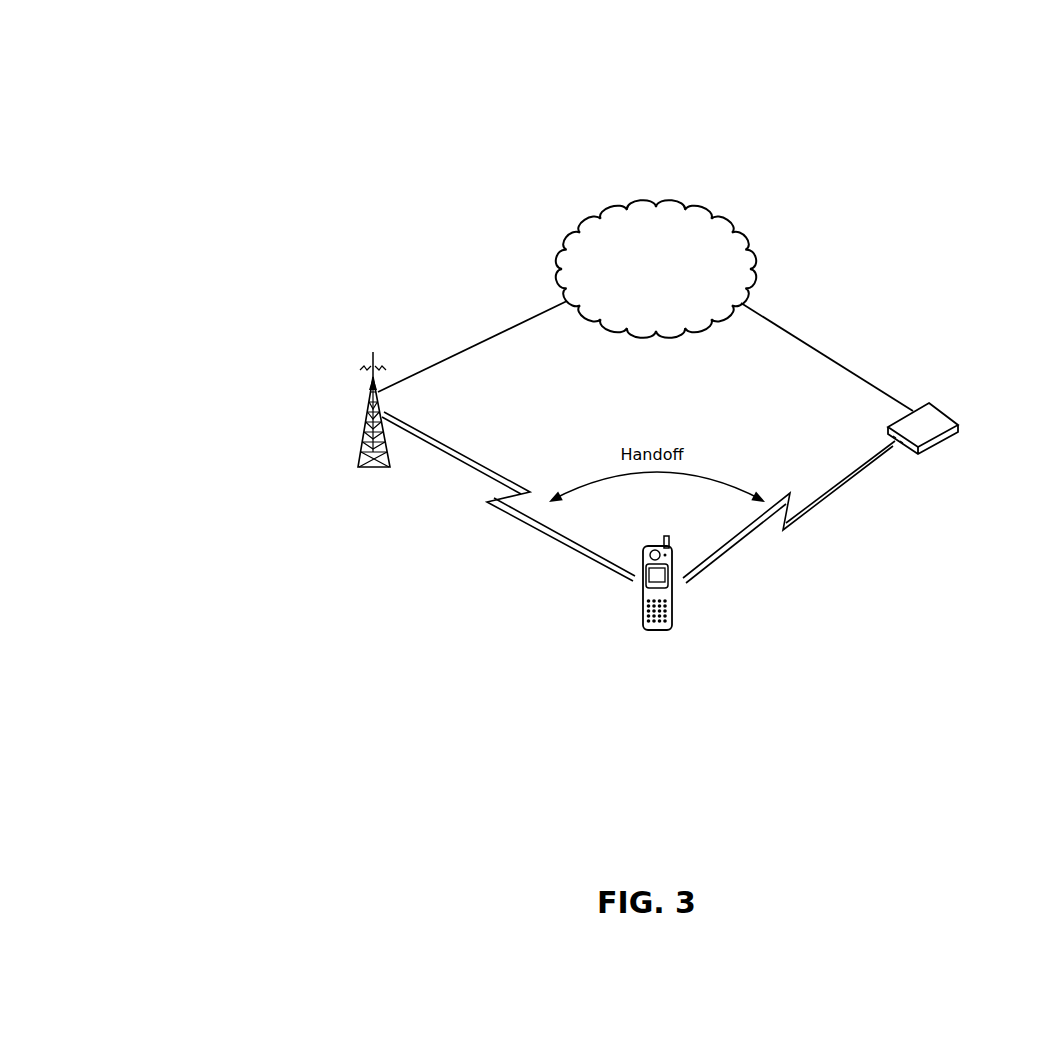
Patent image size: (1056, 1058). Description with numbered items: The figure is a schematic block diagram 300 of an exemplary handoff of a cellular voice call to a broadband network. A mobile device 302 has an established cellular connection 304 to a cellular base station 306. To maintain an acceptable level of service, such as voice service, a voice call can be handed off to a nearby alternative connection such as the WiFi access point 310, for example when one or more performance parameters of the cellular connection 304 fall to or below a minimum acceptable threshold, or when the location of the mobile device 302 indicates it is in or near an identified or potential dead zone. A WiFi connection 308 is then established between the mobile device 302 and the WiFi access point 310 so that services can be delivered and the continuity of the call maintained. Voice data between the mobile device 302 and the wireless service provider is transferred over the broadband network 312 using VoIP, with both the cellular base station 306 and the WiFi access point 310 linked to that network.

The schematic block diagram 300 is at (105, 68).
The mobile device 302 is at (641, 595).
The cellular connection 304 is at (493, 470).
The cellular base station 306 is at (366, 412).
The WiFi connection 308 is at (817, 503).
The WiFi access point 310 is at (943, 412).
The broadband network 312 is at (721, 220).